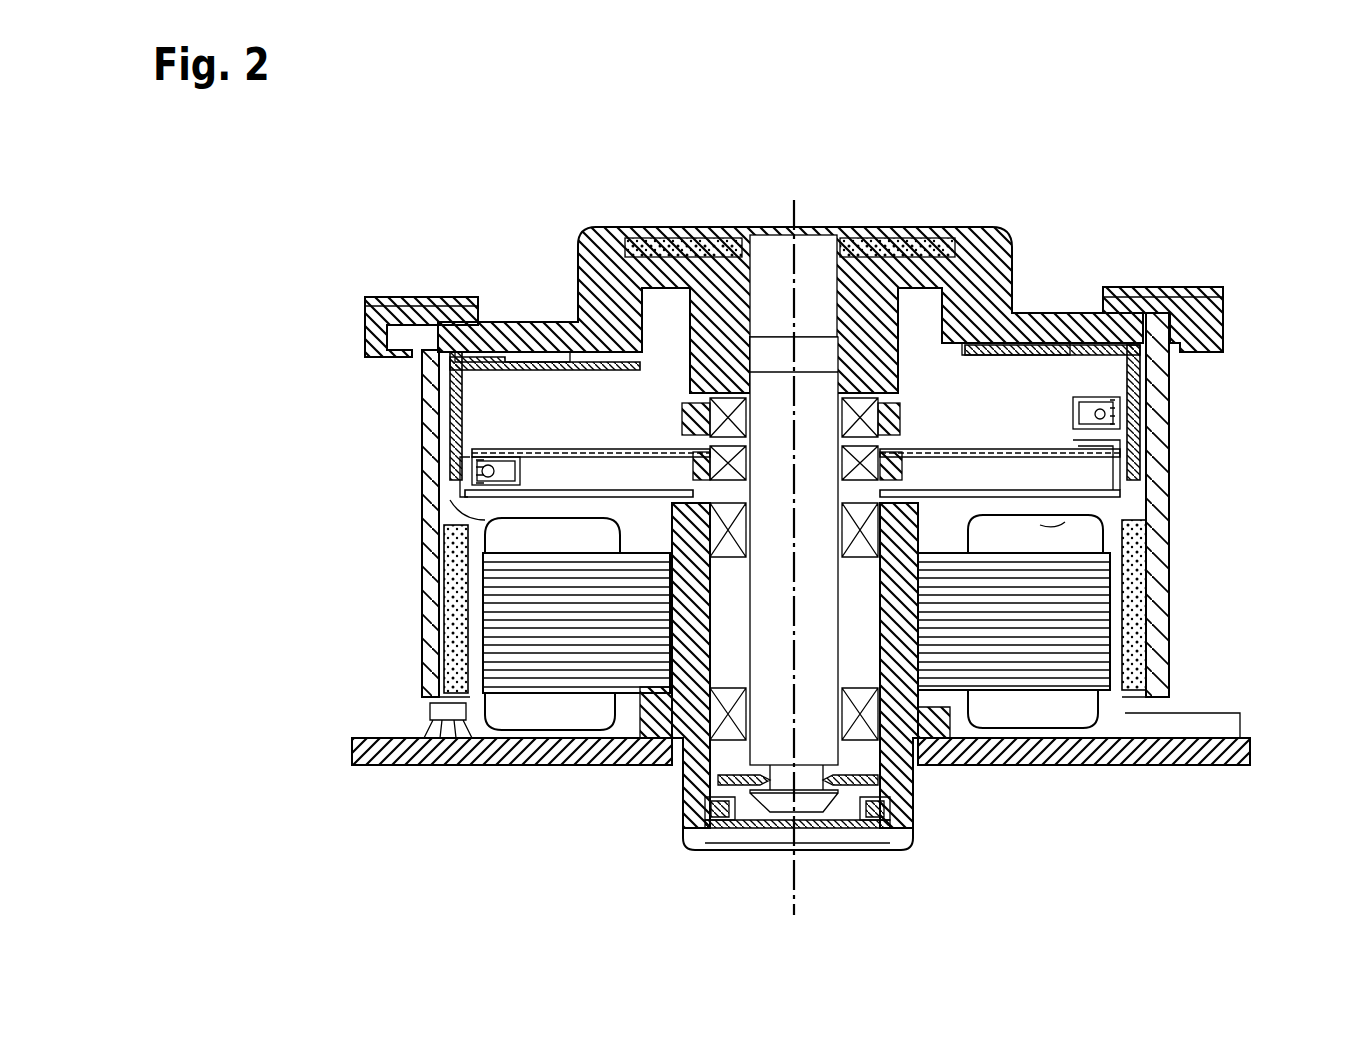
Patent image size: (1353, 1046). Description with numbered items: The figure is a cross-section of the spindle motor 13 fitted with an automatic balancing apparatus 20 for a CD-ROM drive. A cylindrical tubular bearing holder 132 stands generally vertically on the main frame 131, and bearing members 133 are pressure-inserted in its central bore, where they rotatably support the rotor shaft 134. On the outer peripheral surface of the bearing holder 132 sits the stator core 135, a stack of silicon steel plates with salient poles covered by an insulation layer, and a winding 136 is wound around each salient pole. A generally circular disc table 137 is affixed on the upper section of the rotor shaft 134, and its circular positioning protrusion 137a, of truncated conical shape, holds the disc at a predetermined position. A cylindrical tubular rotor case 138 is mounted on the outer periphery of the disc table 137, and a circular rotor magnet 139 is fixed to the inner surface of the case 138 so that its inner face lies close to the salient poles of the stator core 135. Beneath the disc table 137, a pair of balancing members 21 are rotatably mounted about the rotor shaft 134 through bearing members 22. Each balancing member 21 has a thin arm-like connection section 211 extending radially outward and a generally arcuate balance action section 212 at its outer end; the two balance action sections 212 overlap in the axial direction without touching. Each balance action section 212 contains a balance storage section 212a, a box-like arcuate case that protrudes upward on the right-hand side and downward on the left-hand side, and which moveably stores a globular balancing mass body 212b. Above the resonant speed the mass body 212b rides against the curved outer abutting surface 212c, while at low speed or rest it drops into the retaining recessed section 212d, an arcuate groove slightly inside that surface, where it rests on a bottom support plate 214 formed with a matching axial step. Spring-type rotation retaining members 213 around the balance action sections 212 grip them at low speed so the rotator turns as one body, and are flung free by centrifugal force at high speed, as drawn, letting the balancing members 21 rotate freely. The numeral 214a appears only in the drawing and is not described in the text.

The spindle motor 13 is at (385, 570).
The main frame 131 is at (1172, 768).
The bearing holder 132 is at (690, 688).
The bearing members 133 is at (690, 768).
The rotor shaft 134 is at (765, 275).
The stator core 135 is at (578, 662).
The winding 136 is at (1060, 525).
The disc table 137 is at (458, 297).
The positioning protrusion 137a is at (1012, 250).
The rotor case 138 is at (1170, 525).
The rotor magnet 139 is at (455, 627).
The automatic balancing apparatus 20 is at (665, 406).
The balancing members 21 is at (536, 447).
The connection section 211 is at (630, 449).
The balance action section 212 is at (306, 368).
The balance storage section 212a is at (497, 455).
The balancing mass body 212b is at (475, 467).
The outer abutting surface 212c is at (475, 475).
The retaining recessed section 212d is at (475, 484).
The rotation retaining members 213 is at (465, 372).
The bottom support plates 214 is at (468, 497).
The yoke plate 214a is at (585, 490).
The bearing members 22 is at (707, 236).